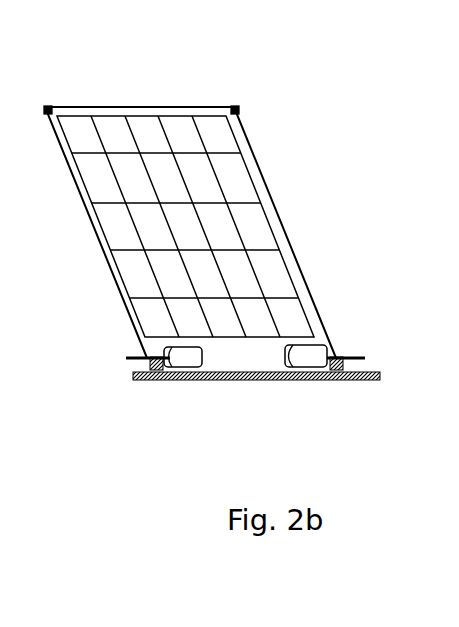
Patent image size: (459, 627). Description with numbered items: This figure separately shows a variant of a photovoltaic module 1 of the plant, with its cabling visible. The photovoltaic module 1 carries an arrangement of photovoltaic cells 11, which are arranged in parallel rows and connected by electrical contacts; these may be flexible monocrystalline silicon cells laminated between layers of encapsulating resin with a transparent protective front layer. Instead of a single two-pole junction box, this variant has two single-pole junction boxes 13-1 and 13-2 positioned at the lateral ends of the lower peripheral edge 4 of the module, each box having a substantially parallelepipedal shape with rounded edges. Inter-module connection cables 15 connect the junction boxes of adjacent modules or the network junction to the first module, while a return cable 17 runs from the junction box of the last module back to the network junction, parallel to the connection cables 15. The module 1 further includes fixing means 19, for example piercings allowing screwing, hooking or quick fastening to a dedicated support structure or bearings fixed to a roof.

The photovoltaic module 1 is at (153, 107).
The photovoltaic cells 11 is at (220, 128).
The fixing means 19 is at (55, 103).
The return cable 17 is at (140, 385).
The inter-module connection cables 15 is at (346, 352).
The single-pole junction box 13-1 is at (183, 383).
The single-pole junction box 13-2 is at (306, 383).
The lower peripheral edge 4 is at (263, 385).